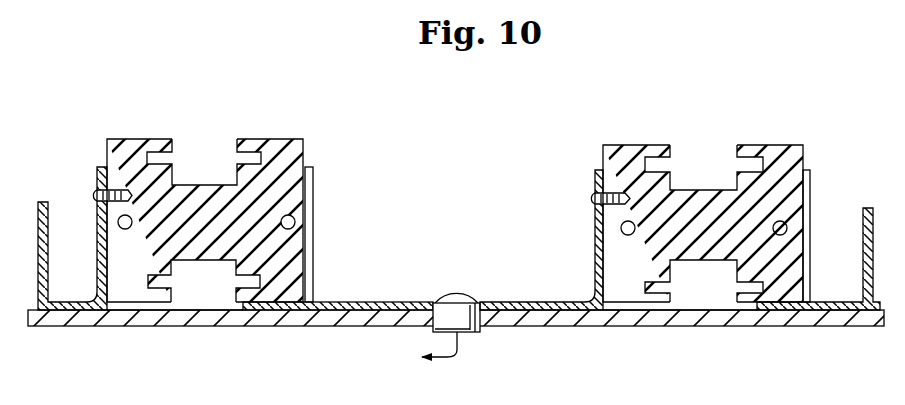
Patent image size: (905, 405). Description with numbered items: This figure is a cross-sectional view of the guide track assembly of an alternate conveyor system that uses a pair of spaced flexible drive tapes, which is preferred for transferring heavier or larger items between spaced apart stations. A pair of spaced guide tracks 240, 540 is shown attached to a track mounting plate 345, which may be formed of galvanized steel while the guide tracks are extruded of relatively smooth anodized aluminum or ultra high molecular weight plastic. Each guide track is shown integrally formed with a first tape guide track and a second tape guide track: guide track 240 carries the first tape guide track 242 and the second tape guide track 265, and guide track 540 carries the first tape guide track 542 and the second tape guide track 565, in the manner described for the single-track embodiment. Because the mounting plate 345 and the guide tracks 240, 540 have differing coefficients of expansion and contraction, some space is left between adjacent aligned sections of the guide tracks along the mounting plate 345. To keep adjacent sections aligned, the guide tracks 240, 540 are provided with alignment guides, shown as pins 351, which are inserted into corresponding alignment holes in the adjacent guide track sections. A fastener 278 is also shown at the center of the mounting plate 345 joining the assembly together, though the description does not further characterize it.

The guide track 240 is at (101, 126).
The first tape guide track 242 is at (213, 141).
The second tape guide track 265 is at (203, 284).
The pins 351 is at (295, 218).
The track mounting plate 345 is at (344, 304).
The rivet 278 is at (458, 295).
The guide track 540 is at (599, 130).
The first tape guide track 542 is at (709, 141).
The second tape guide track 565 is at (705, 284).